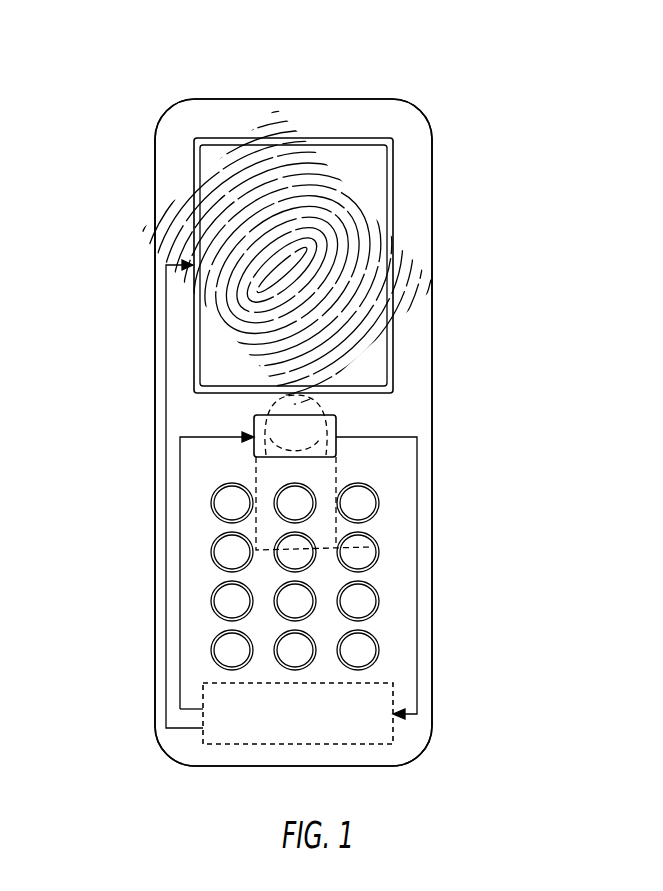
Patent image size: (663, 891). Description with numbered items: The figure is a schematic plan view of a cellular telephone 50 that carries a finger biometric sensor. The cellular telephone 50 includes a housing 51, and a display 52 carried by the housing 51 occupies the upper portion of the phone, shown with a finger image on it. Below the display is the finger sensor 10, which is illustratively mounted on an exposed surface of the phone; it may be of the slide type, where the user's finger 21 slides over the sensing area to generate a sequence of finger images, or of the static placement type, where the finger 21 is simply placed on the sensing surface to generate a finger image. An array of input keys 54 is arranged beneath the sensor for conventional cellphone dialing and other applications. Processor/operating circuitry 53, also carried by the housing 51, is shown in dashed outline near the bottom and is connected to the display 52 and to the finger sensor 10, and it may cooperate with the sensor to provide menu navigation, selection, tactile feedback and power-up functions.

The cellular telephone 50 is at (214, 97).
The housing 51 is at (155, 231).
The display 52 is at (373, 160).
The finger sensor 10 is at (248, 425).
The finger 21 is at (322, 478).
The input keys 54 is at (365, 551).
The processor/operating circuitry 53 is at (226, 733).